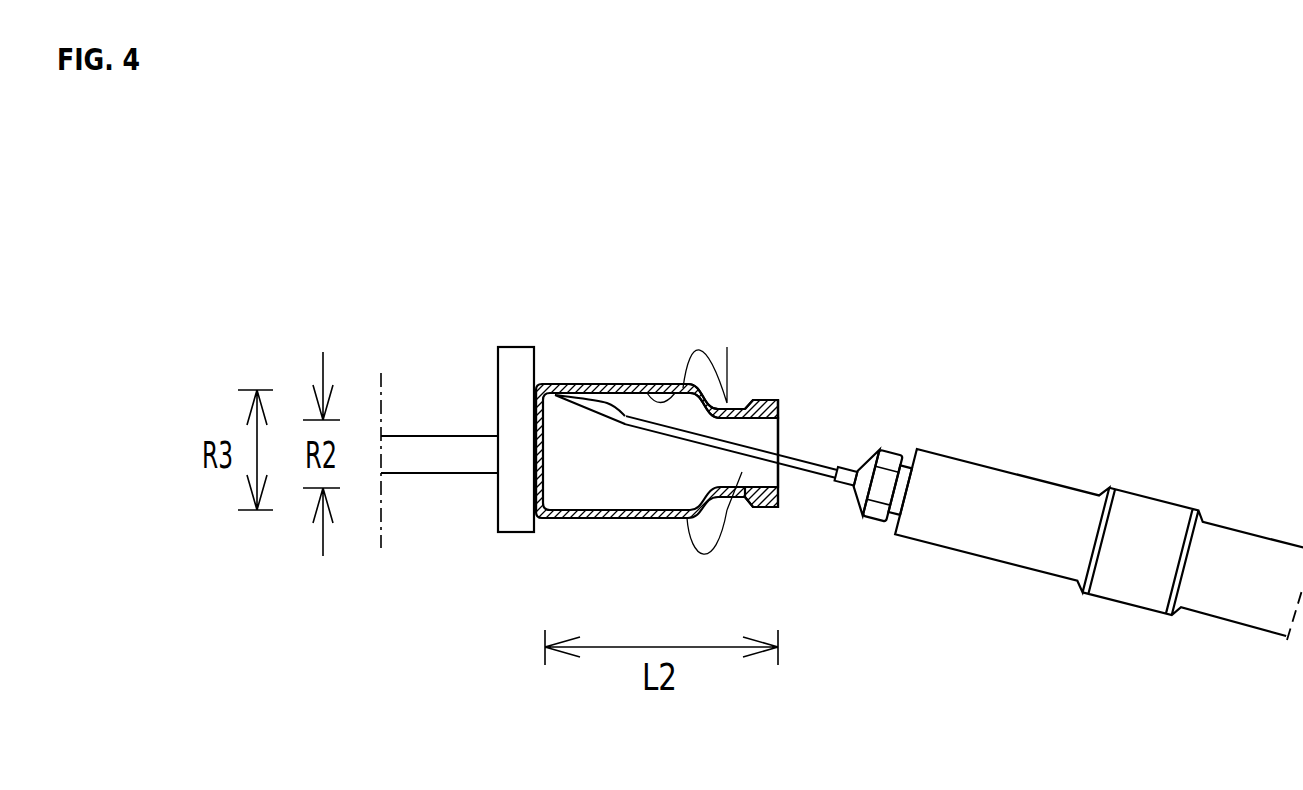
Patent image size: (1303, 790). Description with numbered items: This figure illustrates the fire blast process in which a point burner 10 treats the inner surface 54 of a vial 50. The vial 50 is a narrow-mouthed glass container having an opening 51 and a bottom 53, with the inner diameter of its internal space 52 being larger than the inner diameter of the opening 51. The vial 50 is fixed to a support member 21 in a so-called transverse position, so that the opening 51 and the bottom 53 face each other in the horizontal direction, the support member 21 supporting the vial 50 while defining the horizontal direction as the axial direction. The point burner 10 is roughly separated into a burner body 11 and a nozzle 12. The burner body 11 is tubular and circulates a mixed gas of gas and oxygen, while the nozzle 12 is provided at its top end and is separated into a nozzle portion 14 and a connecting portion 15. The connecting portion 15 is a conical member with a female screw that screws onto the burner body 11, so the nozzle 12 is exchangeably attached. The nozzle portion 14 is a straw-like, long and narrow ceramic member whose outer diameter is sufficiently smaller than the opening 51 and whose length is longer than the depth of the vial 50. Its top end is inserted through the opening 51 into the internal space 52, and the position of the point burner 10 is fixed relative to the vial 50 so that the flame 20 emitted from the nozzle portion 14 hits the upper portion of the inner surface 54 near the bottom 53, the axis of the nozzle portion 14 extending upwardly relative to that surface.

The point burner 10 is at (1075, 546).
The burner body 11 is at (902, 537).
The nozzle 12 is at (746, 503).
The nozzle portion 14 is at (742, 402).
The connecting portion 15 is at (893, 447).
The flame 20 is at (617, 393).
The support member 21 is at (437, 436).
The vial 50 is at (657, 431).
The opening 51 is at (778, 500).
The internal space 52 is at (578, 510).
The bottom 53 is at (538, 383).
The inner surface 54 is at (680, 392).